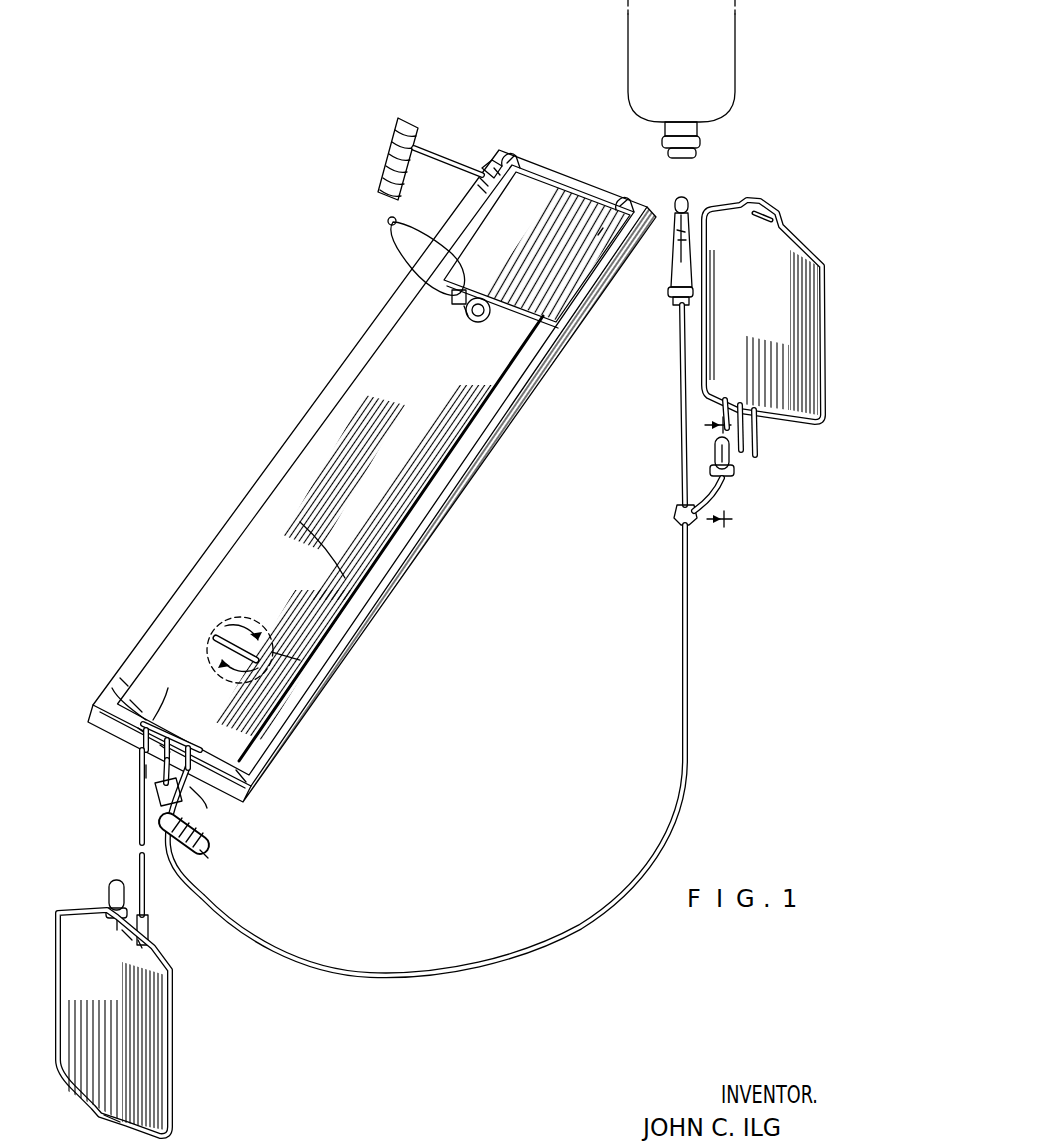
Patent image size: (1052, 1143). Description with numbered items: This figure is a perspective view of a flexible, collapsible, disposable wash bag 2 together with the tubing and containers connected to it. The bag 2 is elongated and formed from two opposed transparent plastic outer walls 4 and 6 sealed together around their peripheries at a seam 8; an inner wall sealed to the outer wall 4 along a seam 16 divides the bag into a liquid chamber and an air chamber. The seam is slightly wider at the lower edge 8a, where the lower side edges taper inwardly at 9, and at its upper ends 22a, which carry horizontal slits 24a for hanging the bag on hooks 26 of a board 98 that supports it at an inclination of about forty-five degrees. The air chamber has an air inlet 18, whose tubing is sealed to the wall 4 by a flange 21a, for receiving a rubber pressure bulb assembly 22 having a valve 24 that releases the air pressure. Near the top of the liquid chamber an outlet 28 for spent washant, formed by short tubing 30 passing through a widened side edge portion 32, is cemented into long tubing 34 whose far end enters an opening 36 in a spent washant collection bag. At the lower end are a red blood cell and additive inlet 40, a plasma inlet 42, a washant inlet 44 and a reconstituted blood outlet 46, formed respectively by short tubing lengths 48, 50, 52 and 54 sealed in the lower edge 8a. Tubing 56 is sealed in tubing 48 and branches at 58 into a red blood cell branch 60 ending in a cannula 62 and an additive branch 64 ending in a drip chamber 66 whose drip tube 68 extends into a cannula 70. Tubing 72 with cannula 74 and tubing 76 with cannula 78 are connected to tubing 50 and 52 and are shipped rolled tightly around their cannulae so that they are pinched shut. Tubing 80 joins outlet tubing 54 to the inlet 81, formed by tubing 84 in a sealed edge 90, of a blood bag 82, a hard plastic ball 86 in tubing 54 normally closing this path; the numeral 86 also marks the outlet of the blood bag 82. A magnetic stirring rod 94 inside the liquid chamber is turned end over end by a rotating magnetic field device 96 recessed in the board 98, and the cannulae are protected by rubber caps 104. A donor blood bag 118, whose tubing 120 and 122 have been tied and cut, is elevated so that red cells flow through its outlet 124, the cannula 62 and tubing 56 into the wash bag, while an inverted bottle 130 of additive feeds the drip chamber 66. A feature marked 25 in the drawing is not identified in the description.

The wash bag 2 is at (607, 150).
The outer wall 4 is at (420, 478).
The outer wall 6 is at (710, 476).
The sealed seam 8 is at (537, 160).
The lower edge seam portion 8a is at (138, 730).
The tapered lower side edges 9 is at (138, 715).
The seam 16 is at (493, 285).
The air inlet 18 is at (473, 308).
The flange 21a is at (464, 314).
The pressure bulb assembly 22 is at (415, 256).
The widened seam ends 22a is at (510, 156).
The valve 24 is at (452, 298).
The horizontal slits 24a is at (625, 280).
The filter line 25 is at (312, 535).
The hooks 26 is at (507, 193).
The spent washant outlet 28 is at (483, 165).
The outlet tubing 30 is at (481, 170).
The widened upper side edge portion 32 is at (479, 188).
The spent washant tubing 34 is at (408, 140).
The opening 36 is at (398, 125).
The red blood cell and additive inlet 40 is at (162, 733).
The plasma inlet 42 is at (178, 735).
The washant inlet 44 is at (200, 745).
The reconstituted blood outlet 46 is at (158, 716).
The inlet tubing 48 is at (162, 743).
The plasma inlet tubing 50 is at (203, 792).
The washant inlet tubing 52 is at (250, 766).
The outlet tubing 54 is at (132, 700).
The inlet tubing 56 is at (222, 913).
The branch point 58 is at (680, 521).
The red blood cell branch 60 is at (723, 483).
The cannula 62 is at (713, 455).
The additive branch 64 is at (680, 395).
The drip chamber 66 is at (675, 280).
The drip tube 68 is at (673, 242).
The cannula 70 is at (695, 192).
The plasma tubing 72 is at (184, 805).
The cannula 74 is at (159, 832).
The washant tubing 76 is at (206, 836).
The cannula 78 is at (195, 852).
The transfer tubing 80 is at (140, 773).
The blood bag inlet 81 is at (140, 943).
The blood bag 82 is at (153, 1027).
The inlet tubing 84 is at (150, 922).
The ball closure 86 is at (130, 677).
The sealed peripheral edges 90 is at (127, 933).
The magnetic stirring rod 94 is at (256, 625).
The rotating magnetic field creating device 96 is at (300, 665).
The board 98 is at (298, 713).
The rubber cap 104 is at (684, 200).
The blood bag 118 is at (812, 325).
The tubing 120 is at (757, 443).
The tubing 122 is at (770, 442).
The outlet 124 is at (714, 400).
The bottle 130 is at (732, 74).